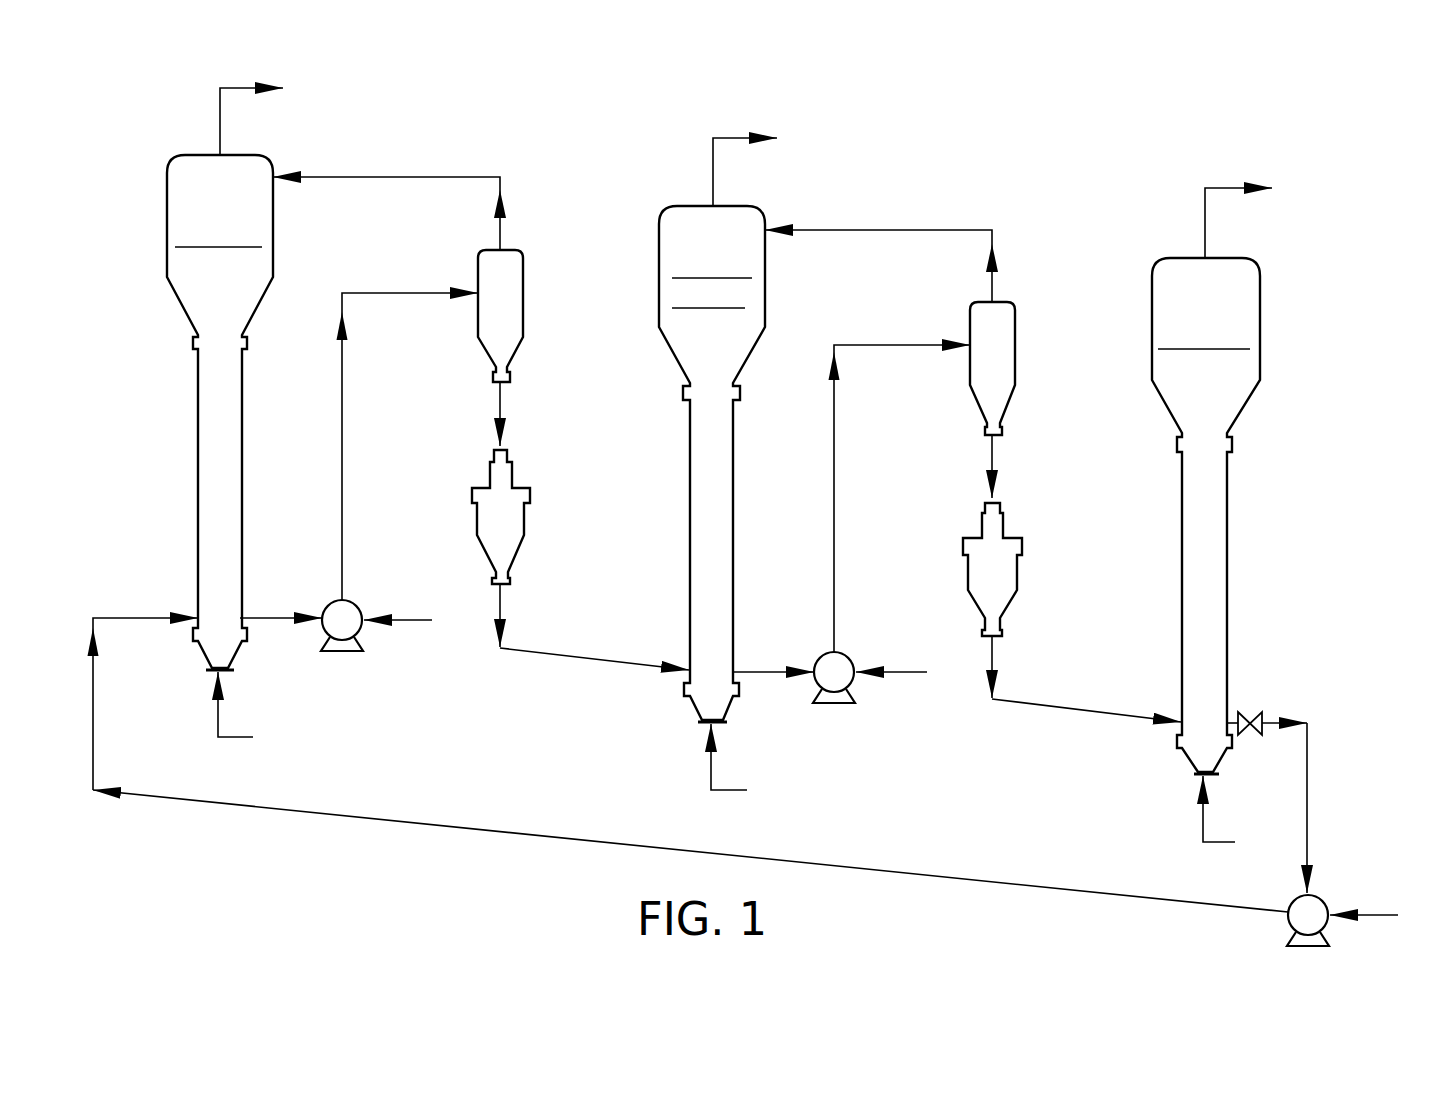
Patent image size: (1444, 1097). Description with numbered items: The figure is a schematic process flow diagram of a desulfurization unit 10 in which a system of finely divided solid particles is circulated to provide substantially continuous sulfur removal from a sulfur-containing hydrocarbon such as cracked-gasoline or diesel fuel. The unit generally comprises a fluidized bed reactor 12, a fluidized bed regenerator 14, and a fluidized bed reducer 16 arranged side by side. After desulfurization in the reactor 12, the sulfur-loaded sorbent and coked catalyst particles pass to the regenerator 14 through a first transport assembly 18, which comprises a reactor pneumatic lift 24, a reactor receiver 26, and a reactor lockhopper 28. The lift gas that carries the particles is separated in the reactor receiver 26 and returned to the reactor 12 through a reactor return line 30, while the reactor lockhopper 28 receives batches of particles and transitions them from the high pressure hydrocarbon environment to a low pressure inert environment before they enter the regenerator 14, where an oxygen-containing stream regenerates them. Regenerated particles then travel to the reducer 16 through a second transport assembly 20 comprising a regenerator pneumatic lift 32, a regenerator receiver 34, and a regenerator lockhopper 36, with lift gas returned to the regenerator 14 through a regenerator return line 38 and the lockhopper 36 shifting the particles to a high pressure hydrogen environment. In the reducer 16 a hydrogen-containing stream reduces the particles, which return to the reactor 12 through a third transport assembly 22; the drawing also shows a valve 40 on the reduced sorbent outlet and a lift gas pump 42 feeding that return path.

The desulfurization unit 10 is at (1062, 160).
The fluidized bed reactor 12 is at (167, 203).
The fluidized bed regenerator 14 is at (659, 256).
The fluidized bed reducer 16 is at (1152, 308).
The first transport assembly 18 is at (536, 285).
The second transport assembly 20 is at (1027, 338).
The third transport assembly 22 is at (915, 876).
The reactor pneumatic lift 24 is at (355, 633).
The reactor receiver 26 is at (523, 305).
The reactor lockhopper 28 is at (524, 525).
The reactor return line 30 is at (480, 177).
The regenerator pneumatic lift 32 is at (849, 685).
The regenerator receiver 34 is at (1015, 355).
The regenerator lockhopper 36 is at (1018, 575).
The regenerator return line 38 is at (983, 230).
The reduced sorbent valve 40 is at (1250, 735).
The reduced sorbent lift gas pump 42 is at (1320, 900).